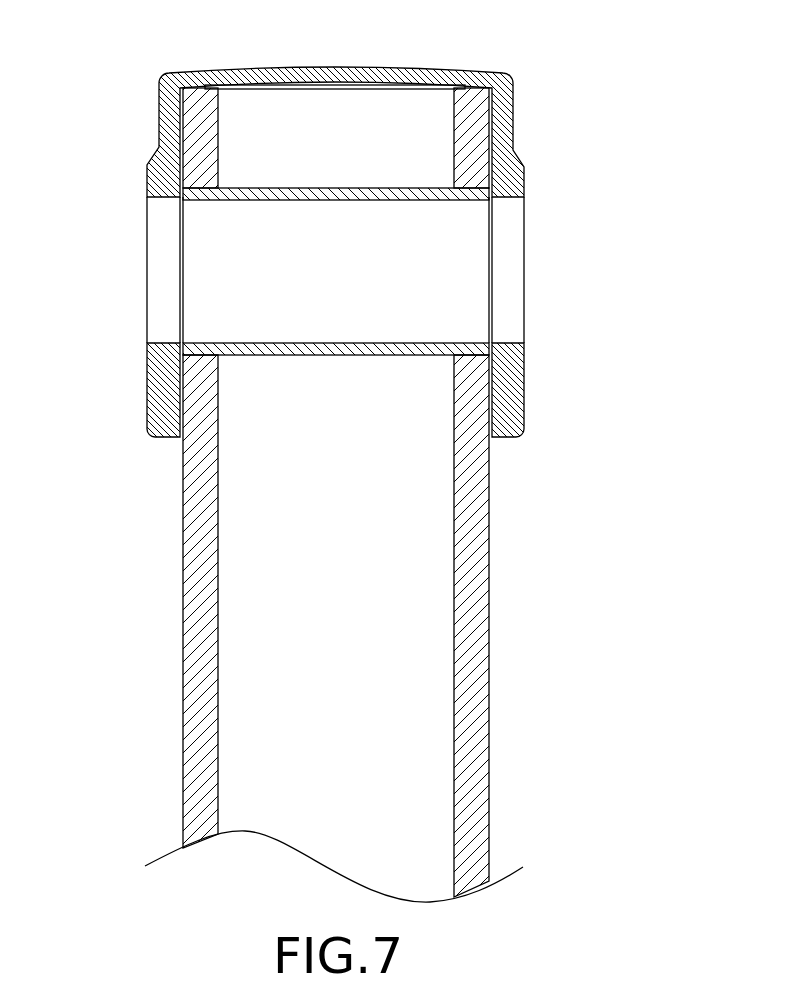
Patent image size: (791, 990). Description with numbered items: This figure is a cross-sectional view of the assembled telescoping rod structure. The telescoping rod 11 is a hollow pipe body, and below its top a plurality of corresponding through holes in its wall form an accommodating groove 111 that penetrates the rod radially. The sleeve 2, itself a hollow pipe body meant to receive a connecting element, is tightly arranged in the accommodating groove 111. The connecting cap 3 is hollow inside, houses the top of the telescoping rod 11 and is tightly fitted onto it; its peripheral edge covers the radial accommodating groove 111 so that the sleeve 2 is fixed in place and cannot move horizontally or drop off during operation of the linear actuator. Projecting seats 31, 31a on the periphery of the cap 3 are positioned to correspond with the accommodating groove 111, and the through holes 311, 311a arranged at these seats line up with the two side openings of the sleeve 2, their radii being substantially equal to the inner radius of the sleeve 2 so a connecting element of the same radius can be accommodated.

The connecting cap 3 is at (527, 114).
The sleeve 2 is at (237, 190).
The through hole 311 is at (157, 252).
The through hole 311a is at (515, 252).
The projecting seat 31 is at (157, 382).
The projecting seat 31a is at (525, 380).
The accommodating groove 111 is at (473, 352).
The telescoping rod 11 is at (472, 640).